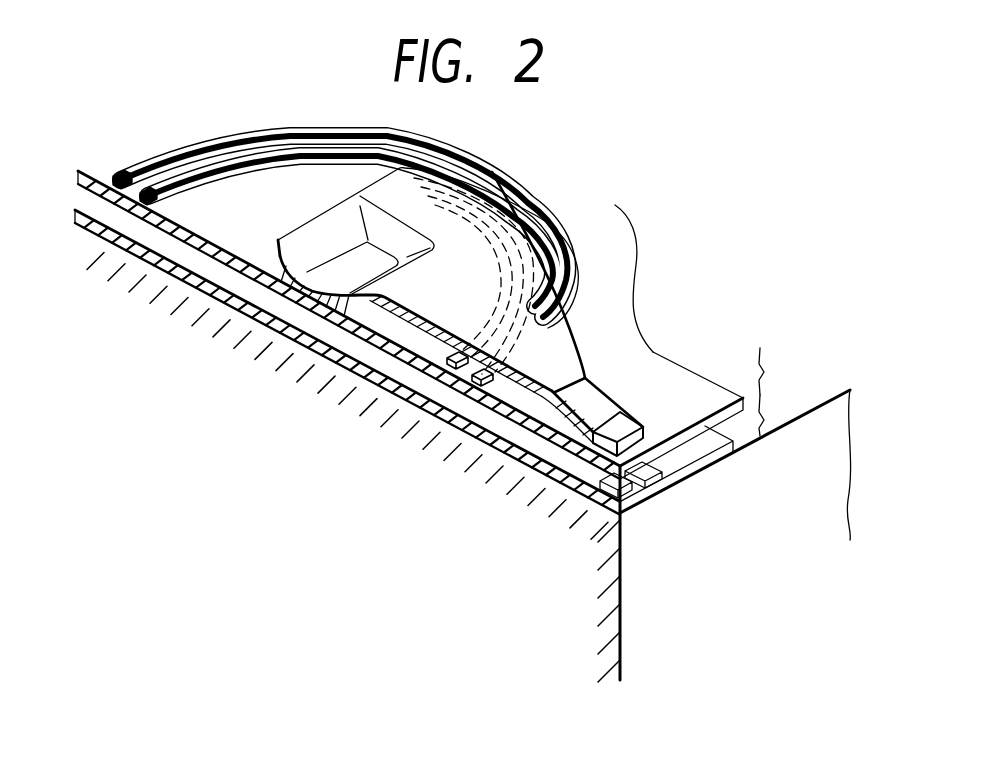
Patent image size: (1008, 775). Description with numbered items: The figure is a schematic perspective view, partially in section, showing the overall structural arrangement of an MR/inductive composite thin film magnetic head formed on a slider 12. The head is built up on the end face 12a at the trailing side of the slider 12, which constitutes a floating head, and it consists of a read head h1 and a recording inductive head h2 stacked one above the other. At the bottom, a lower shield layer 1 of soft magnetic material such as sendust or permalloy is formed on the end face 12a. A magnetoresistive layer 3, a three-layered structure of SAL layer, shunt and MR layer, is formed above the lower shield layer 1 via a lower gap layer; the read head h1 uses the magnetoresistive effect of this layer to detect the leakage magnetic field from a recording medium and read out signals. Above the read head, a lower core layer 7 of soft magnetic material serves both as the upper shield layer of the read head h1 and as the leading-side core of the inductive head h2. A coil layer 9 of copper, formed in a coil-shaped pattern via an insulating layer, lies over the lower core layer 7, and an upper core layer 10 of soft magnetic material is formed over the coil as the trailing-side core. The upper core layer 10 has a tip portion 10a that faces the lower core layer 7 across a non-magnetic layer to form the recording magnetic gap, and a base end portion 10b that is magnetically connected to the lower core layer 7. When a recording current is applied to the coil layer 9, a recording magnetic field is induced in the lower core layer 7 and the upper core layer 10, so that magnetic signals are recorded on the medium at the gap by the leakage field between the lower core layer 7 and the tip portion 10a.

The lower shield layer 1 is at (723, 453).
The magnetoresistive layer 3 is at (640, 500).
The lower core layer 7 is at (653, 357).
The coil layer 9 is at (181, 195).
The upper core layer 10 is at (400, 320).
The tip portion 10a is at (600, 452).
The base end portion 10b is at (289, 304).
The slider 12 is at (577, 576).
The end face 12a is at (822, 389).
The read head h1 is at (770, 422).
The recording inductive head h2 is at (796, 371).